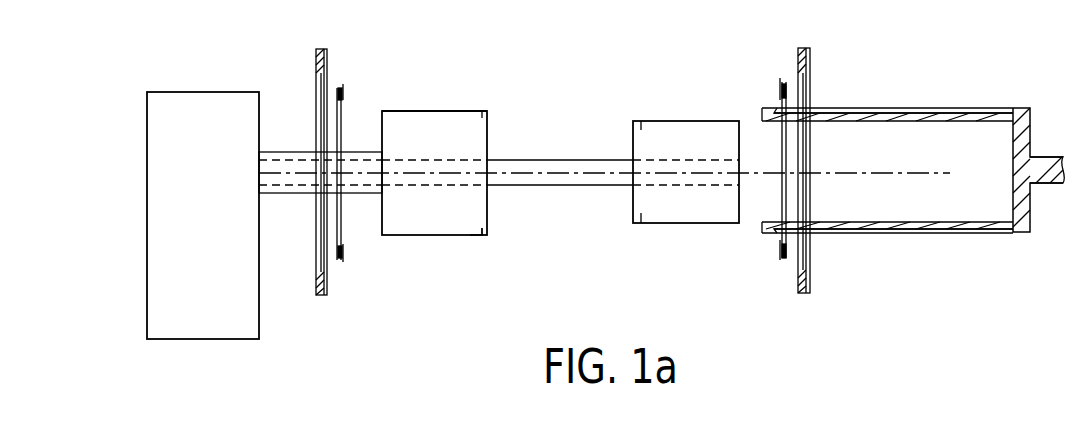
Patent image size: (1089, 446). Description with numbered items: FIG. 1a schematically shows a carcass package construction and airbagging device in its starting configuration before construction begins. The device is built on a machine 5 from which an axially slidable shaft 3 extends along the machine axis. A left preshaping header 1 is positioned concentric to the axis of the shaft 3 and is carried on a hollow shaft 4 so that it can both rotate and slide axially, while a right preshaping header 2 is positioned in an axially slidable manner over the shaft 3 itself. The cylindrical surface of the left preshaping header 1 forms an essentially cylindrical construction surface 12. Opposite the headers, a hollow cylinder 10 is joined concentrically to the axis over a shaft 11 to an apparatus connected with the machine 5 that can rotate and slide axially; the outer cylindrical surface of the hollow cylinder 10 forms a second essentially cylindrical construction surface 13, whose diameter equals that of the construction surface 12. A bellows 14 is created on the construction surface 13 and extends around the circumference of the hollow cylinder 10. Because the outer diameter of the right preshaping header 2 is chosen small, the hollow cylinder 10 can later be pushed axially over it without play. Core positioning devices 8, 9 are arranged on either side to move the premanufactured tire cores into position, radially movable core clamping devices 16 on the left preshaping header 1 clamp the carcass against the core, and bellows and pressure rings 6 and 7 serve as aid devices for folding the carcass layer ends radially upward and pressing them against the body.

The left preshaping header 1 is at (400, 135).
The right preshaping header 2 is at (668, 140).
The axially slidable shaft 3 is at (582, 165).
The hollow shaft 4 is at (352, 160).
The machine 5 is at (171, 164).
The bellows and pressure ring 6 is at (323, 295).
The bellows and pressure ring 7 is at (812, 288).
The core positioning device 8 is at (344, 260).
The core positioning device 9 is at (787, 258).
The hollow cylinder 10 is at (1025, 222).
The shaft 11 is at (1045, 168).
The construction surface 12 is at (447, 111).
The construction surface 13 is at (955, 108).
The bellows 14 is at (862, 110).
The core clamping devices 16 is at (480, 232).